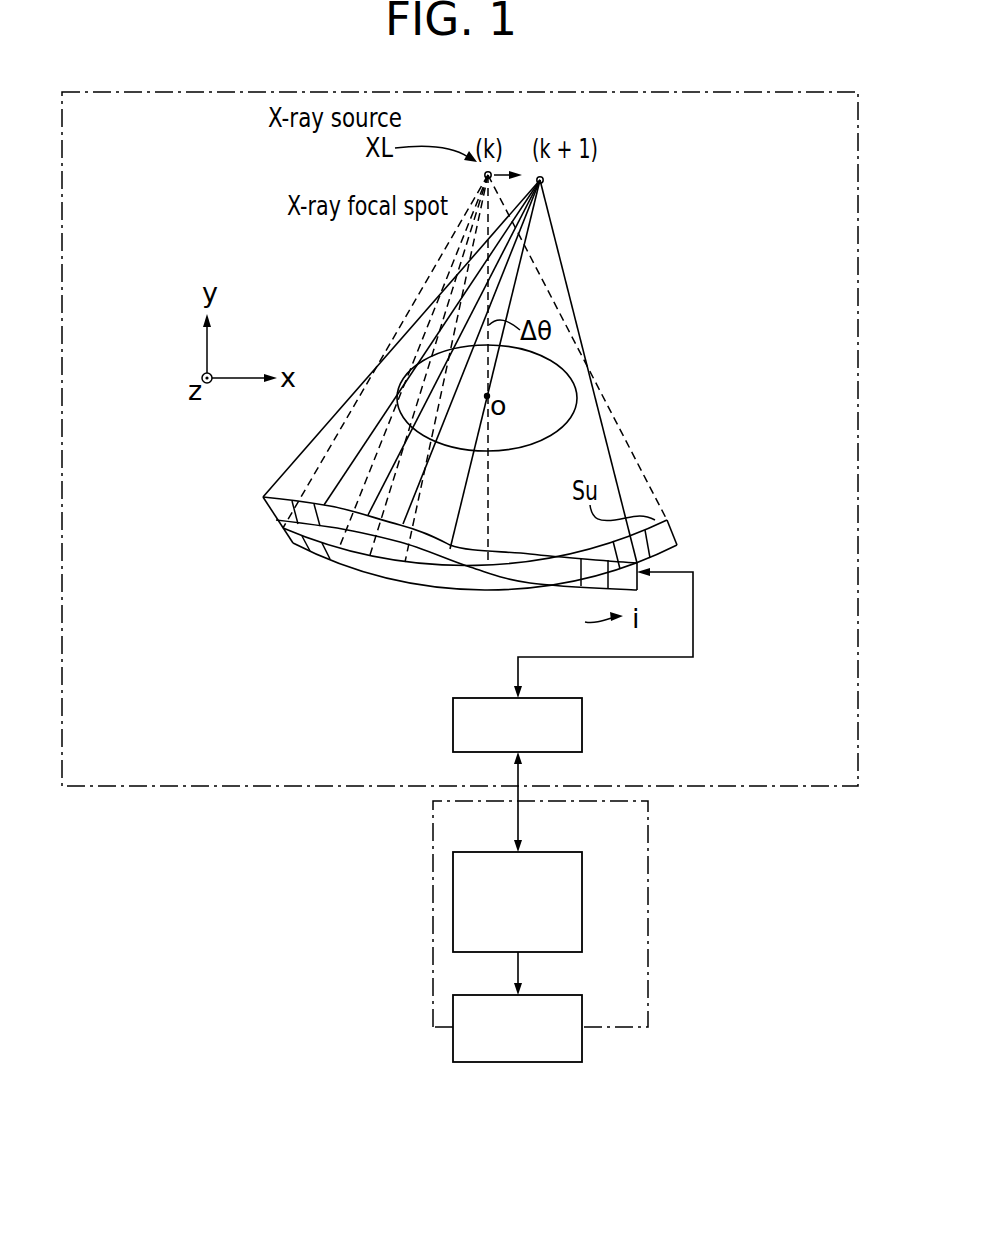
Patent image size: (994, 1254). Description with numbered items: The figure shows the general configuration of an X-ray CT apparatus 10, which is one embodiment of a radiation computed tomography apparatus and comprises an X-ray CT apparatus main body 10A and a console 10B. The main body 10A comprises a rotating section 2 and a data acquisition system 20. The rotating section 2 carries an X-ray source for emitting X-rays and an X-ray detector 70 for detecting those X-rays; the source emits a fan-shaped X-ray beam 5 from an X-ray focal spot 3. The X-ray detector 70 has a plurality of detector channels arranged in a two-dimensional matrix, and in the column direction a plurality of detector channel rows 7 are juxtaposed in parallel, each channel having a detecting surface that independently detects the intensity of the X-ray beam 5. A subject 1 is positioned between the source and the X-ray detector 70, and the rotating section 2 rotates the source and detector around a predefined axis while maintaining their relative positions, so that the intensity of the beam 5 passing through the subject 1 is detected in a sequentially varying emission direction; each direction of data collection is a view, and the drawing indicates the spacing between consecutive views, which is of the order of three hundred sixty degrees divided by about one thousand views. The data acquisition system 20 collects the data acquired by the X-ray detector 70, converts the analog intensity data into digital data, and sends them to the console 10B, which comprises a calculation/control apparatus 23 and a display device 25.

The subject 1 is at (567, 367).
The rotating section 2 is at (606, 273).
The X-ray focal spot 3 is at (484, 175).
The X-ray beam 5 is at (380, 358).
The detector channel row 7 is at (290, 490).
The X-ray detector 70 is at (348, 585).
The data acquisition system 20 is at (582, 727).
The calculation/control apparatus 23 is at (582, 898).
The display device 25 is at (582, 1052).
The X-ray CT apparatus 10 is at (190, 948).
The X-ray CT apparatus main body 10A is at (175, 786).
The console 10B is at (648, 920).